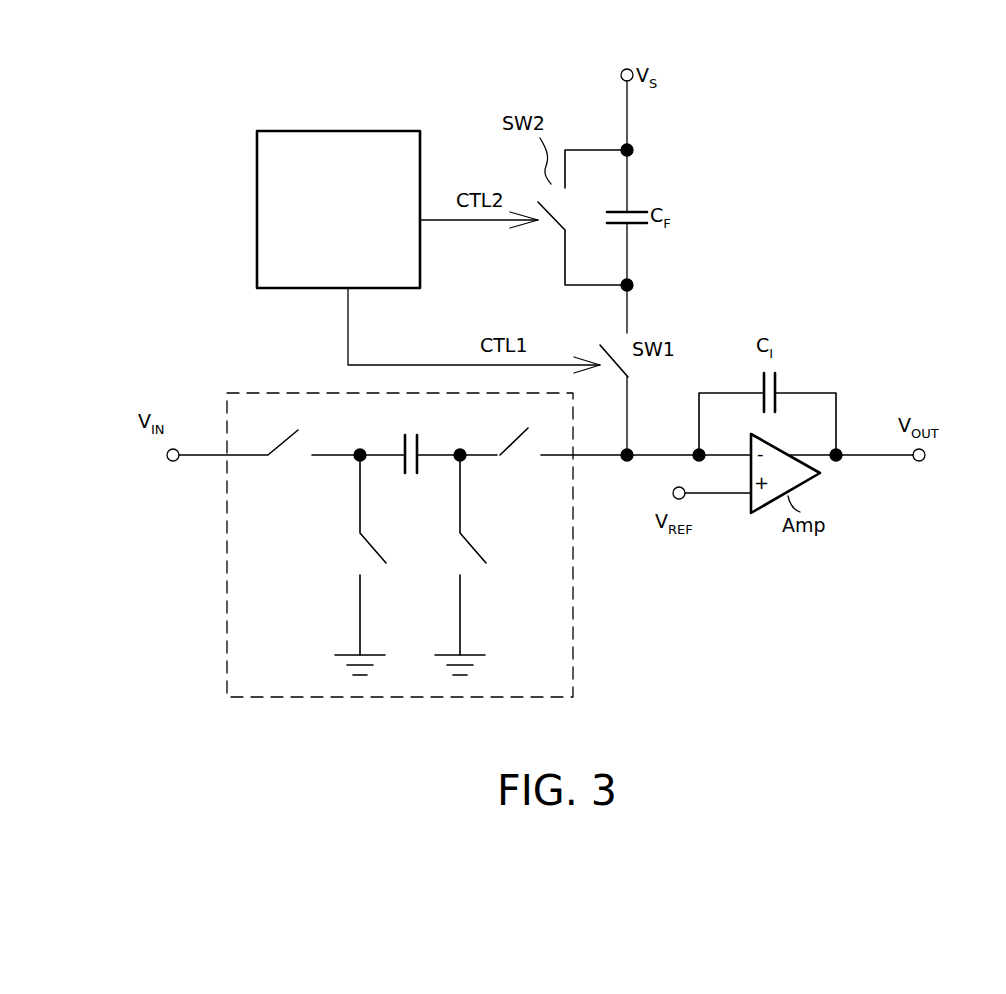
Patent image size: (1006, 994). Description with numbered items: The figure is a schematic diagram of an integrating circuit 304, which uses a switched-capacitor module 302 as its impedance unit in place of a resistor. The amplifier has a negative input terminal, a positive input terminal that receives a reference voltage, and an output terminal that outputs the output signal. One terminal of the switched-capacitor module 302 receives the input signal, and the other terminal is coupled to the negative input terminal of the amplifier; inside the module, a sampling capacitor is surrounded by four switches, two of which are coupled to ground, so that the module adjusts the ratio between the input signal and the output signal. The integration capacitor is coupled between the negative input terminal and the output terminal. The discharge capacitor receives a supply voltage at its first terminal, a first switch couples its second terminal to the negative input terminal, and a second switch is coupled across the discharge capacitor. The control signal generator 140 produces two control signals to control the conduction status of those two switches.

The control signal generator 140 is at (327, 130).
The switched-capacitor module 302 is at (227, 592).
The integrating circuit 304 is at (898, 103).